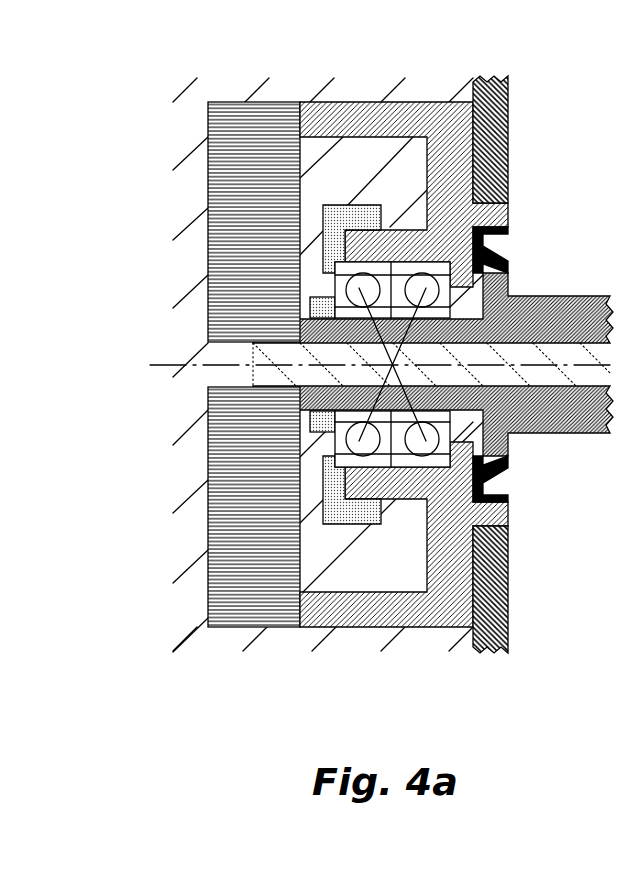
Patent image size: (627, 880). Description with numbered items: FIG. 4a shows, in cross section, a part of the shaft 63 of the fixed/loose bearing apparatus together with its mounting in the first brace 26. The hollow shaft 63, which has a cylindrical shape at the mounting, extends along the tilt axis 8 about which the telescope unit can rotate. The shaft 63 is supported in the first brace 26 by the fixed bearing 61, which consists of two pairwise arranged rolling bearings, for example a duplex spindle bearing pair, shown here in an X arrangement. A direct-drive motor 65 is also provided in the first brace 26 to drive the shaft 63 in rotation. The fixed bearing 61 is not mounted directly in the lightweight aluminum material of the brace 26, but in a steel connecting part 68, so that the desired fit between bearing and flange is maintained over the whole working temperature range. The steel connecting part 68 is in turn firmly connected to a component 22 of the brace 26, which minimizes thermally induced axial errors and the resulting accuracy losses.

The first brace 26 is at (116, 71).
The fixed bearing 61 is at (338, 289).
The direct-drive motor 65 is at (233, 323).
The tilt axis 8 is at (167, 368).
The shaft 63 is at (300, 397).
The connecting part 68 is at (433, 482).
The component 22 is at (487, 622).